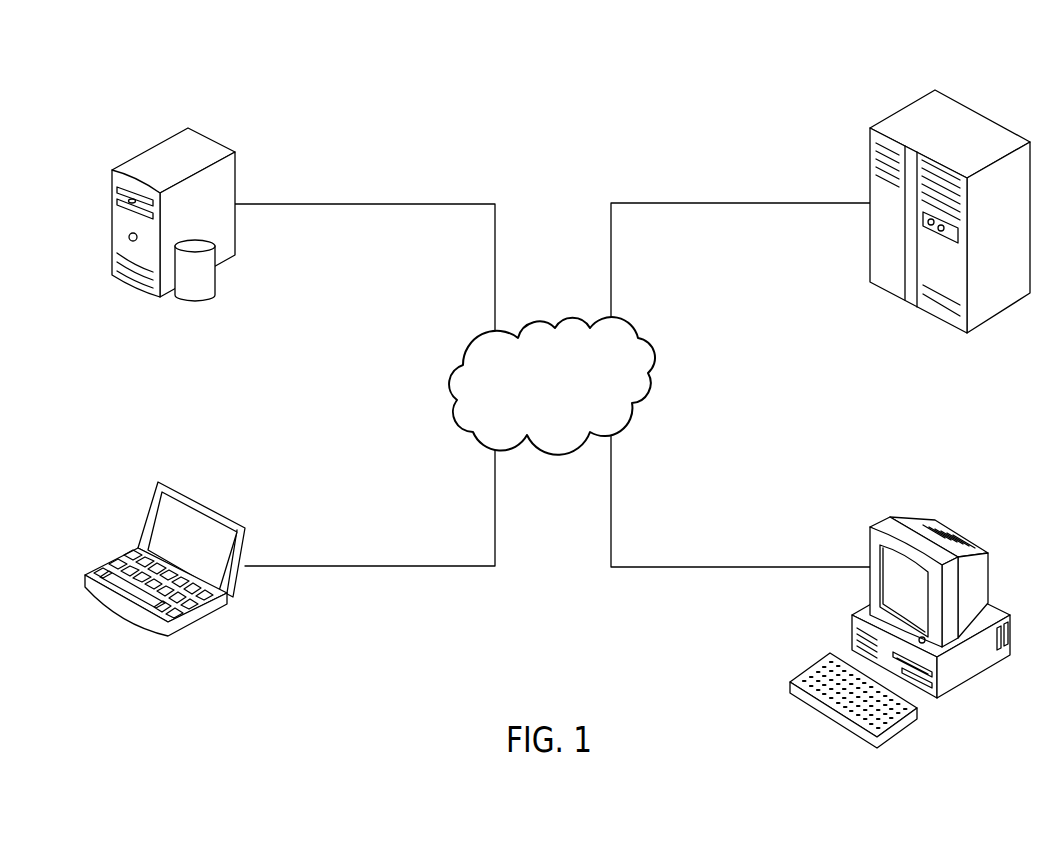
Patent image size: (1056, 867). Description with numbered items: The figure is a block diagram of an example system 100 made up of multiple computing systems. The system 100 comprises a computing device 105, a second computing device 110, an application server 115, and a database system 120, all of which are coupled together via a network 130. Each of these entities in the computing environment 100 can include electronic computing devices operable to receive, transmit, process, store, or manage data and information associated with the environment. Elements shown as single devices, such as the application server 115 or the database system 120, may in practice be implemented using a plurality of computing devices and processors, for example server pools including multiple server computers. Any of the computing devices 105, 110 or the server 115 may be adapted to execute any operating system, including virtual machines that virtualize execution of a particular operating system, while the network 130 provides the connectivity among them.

The system 100 is at (695, 128).
The computing device 105 is at (205, 503).
The computing device 110 is at (960, 533).
The application server 115 is at (982, 116).
The database system 120 is at (214, 141).
The network 130 is at (538, 318).